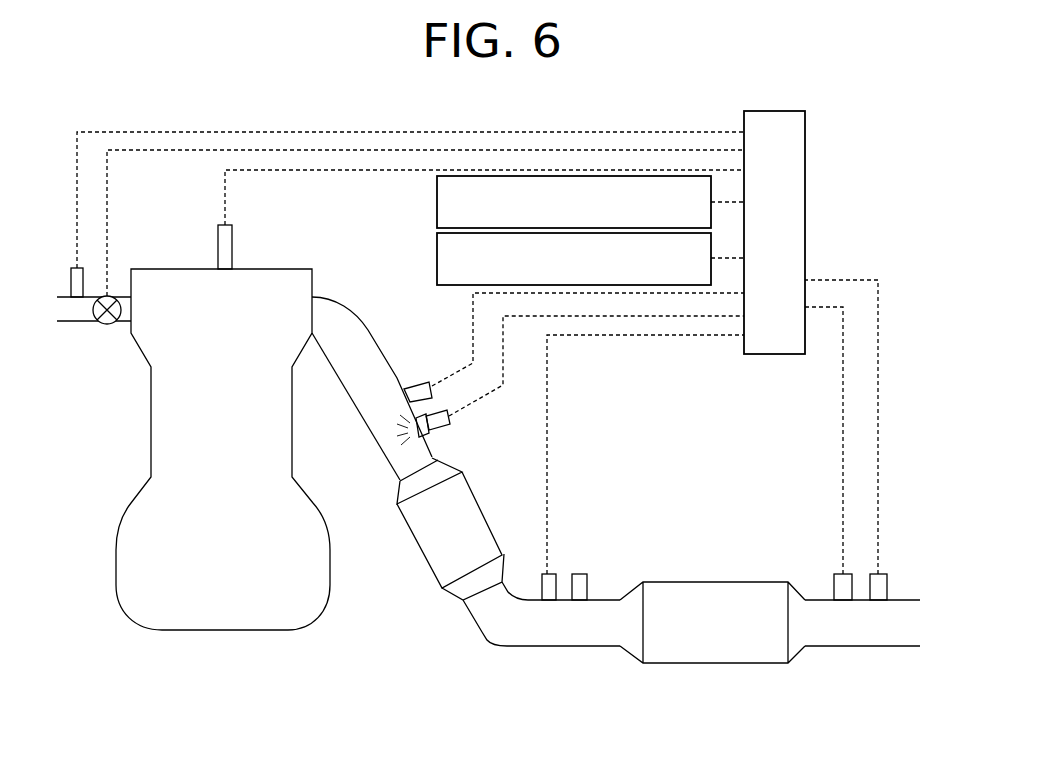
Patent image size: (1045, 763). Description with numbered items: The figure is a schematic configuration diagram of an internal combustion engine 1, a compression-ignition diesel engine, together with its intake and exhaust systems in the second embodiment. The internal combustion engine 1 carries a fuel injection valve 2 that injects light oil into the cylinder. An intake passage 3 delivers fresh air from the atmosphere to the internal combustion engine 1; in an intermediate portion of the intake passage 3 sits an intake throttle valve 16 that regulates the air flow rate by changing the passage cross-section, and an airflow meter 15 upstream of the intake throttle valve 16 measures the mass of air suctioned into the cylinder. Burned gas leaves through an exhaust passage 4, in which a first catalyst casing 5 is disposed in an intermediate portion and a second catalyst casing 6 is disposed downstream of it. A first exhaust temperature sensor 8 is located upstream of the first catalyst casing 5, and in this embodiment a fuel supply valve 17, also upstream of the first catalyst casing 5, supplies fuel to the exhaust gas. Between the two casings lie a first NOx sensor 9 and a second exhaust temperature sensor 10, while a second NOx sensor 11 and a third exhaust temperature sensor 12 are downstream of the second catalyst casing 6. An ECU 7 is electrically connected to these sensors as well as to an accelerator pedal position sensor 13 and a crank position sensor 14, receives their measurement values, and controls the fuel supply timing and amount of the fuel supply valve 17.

The internal combustion engine 1 is at (230, 627).
The fuel injection valve 2 is at (233, 233).
The intake passage 3 is at (70, 323).
The exhaust passage 4 is at (353, 303).
The first catalyst casing 5 is at (427, 568).
The second catalyst casing 6 is at (725, 582).
The ECU 7 is at (807, 178).
The first exhaust temperature sensor 8 is at (418, 382).
The first NOx sensor 9 is at (543, 572).
The second exhaust temperature sensor 10 is at (588, 582).
The second NOx sensor 11 is at (830, 578).
The third exhaust temperature sensor 12 is at (887, 583).
The accelerator pedal position sensor 13 is at (437, 187).
The crank position sensor 14 is at (437, 268).
The airflow meter 15 is at (78, 267).
The intake throttle valve 16 is at (107, 323).
The fuel supply valve 17 is at (447, 425).